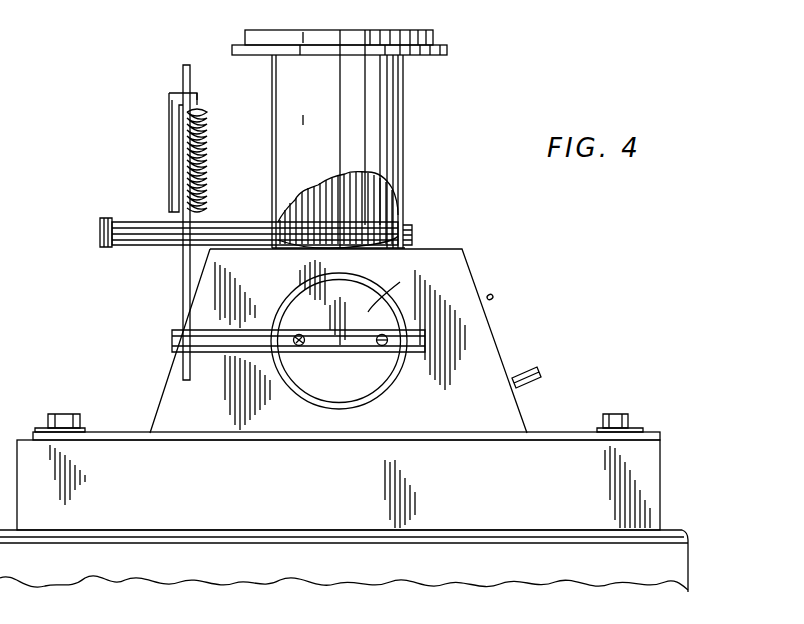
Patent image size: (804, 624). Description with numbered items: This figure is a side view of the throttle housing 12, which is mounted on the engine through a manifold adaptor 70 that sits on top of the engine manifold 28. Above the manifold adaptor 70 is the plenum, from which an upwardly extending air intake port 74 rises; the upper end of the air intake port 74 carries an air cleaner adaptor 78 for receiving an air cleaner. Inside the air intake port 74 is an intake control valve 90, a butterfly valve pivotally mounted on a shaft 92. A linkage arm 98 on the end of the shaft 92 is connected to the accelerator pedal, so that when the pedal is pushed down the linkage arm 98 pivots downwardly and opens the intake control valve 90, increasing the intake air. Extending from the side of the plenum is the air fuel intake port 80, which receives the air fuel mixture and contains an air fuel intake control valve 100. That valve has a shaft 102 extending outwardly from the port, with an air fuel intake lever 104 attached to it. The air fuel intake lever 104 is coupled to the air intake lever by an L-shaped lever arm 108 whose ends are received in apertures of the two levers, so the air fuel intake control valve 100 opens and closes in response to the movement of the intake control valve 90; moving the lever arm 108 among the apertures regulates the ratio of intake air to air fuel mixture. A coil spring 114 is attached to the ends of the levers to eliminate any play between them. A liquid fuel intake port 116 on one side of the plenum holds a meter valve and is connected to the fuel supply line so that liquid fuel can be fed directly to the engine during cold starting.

The throttle housing 12 is at (526, 261).
The engine manifold 28 is at (652, 566).
The manifold adaptor 70 is at (550, 432).
The air intake port 74 is at (397, 100).
The air cleaner adaptor 78 is at (437, 44).
The air fuel intake port 80 is at (378, 388).
The intake control valve 90 is at (380, 228).
The shaft 92 is at (222, 232).
The linkage arm 98 is at (106, 218).
The air fuel intake control valve 100 is at (400, 282).
The shaft 102 is at (253, 352).
The air fuel intake lever 104 is at (185, 278).
The L-shaped lever arm 108 is at (168, 125).
The coil spring 114 is at (204, 168).
The liquid fuel intake port 116 is at (541, 369).